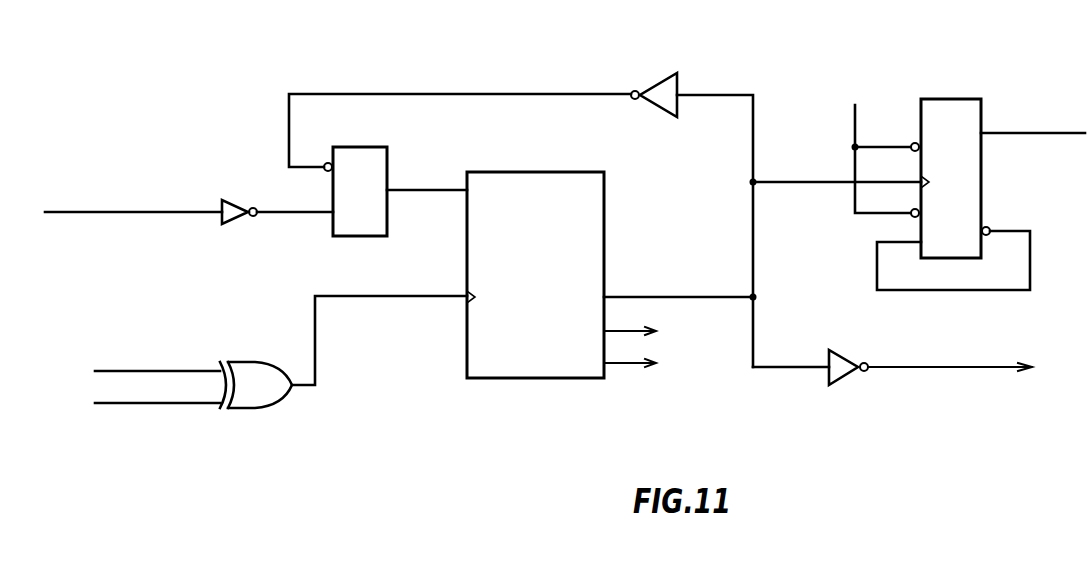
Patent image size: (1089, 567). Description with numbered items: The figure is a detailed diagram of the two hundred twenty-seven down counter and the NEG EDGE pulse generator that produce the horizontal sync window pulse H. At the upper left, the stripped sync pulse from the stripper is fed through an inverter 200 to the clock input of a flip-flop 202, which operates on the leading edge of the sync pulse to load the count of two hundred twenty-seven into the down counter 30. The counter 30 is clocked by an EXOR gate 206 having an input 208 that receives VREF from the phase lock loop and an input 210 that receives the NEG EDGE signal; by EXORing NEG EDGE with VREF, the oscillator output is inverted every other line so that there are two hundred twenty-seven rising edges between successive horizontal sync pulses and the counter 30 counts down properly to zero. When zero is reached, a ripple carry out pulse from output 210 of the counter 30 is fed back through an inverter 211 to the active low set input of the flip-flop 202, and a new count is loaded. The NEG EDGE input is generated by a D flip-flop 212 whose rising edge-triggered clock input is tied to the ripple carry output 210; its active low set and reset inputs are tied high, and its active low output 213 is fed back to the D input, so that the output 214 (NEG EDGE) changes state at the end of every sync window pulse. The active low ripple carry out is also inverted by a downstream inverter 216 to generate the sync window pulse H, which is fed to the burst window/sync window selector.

The inverter 200 is at (237, 203).
The flip-flop 202 is at (391, 170).
The 227 down counter 30 is at (535, 172).
The EXOR gate 206 is at (257, 361).
The input 208 is at (218, 368).
The input / ripple carry output 210 is at (220, 405).
The inverter 211 is at (655, 73).
The D flip-flop 212 is at (984, 185).
The active low output 213 is at (990, 238).
The output 214 is at (983, 133).
The inverter 216 is at (843, 386).